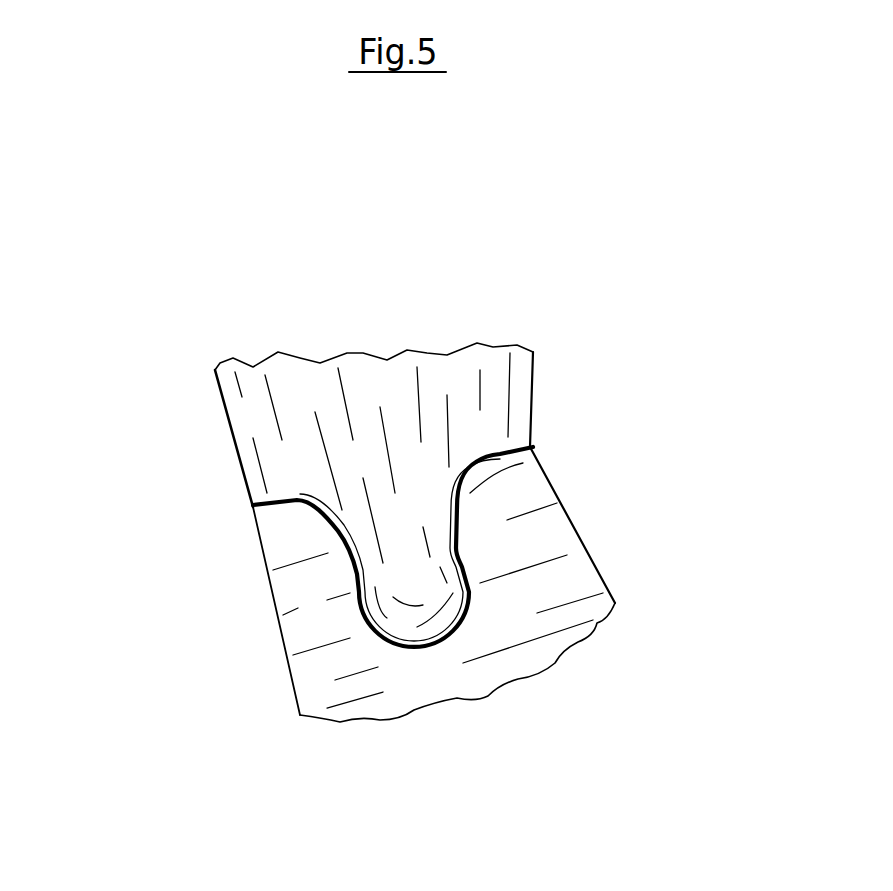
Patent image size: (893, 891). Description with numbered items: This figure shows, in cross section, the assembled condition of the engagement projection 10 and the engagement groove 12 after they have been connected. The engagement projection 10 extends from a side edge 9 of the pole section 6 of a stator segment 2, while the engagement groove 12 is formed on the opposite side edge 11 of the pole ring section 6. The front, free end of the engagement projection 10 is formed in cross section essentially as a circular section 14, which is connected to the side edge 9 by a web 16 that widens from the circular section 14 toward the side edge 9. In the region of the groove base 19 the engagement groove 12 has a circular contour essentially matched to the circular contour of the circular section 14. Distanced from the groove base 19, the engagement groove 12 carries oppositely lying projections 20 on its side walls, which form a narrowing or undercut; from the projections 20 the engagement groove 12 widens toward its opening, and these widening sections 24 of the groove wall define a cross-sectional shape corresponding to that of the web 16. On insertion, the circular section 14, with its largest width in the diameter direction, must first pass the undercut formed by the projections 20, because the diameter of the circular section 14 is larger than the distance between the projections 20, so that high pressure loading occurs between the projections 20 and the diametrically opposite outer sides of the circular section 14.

The stator segment 2 is at (205, 432).
The pole section 6 is at (452, 338).
The side edge 9 is at (253, 510).
The engagement projection 10 is at (403, 528).
The side edge 11 is at (353, 537).
The engagement groove 12 is at (352, 622).
The circular section 14 is at (467, 590).
The web 16 is at (352, 538).
The groove base 19 is at (420, 653).
The projections 20 is at (350, 587).
The widening sections 24 is at (460, 503).